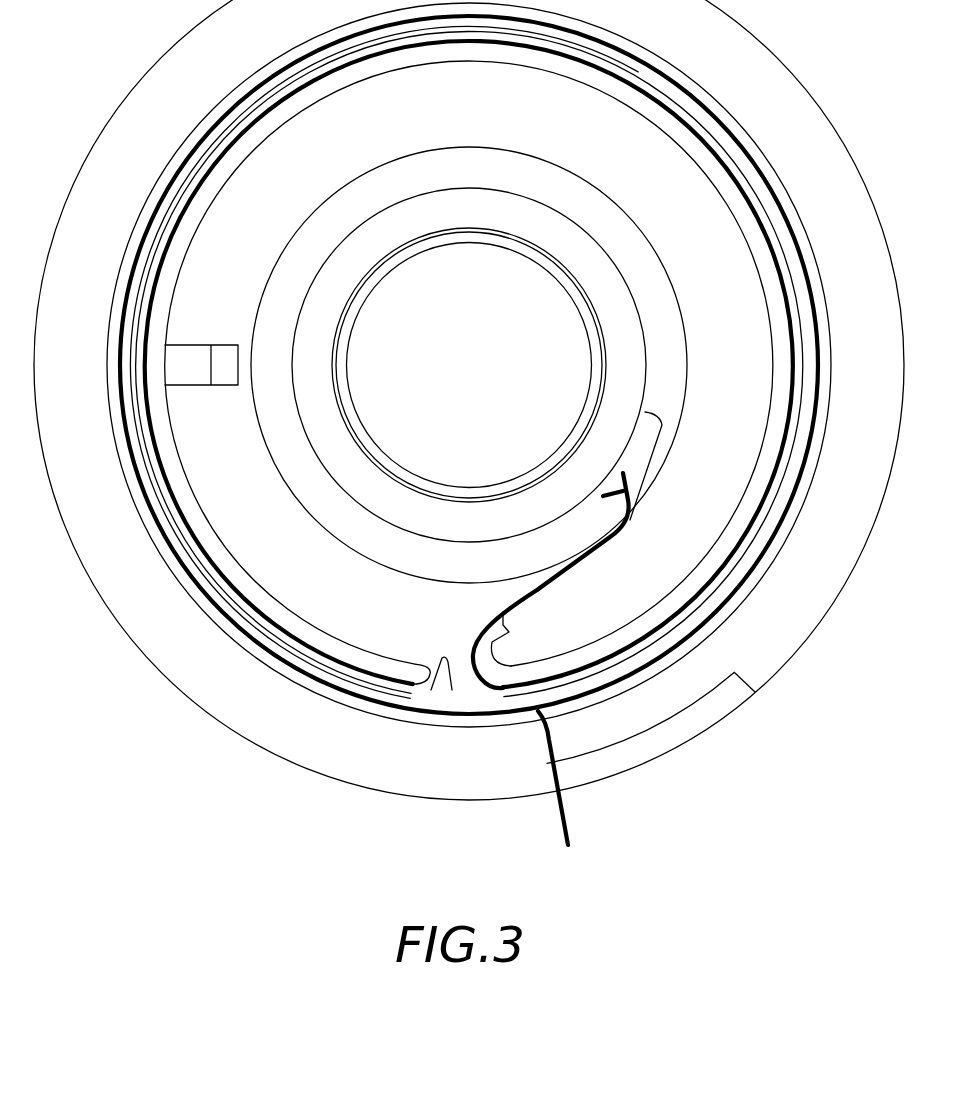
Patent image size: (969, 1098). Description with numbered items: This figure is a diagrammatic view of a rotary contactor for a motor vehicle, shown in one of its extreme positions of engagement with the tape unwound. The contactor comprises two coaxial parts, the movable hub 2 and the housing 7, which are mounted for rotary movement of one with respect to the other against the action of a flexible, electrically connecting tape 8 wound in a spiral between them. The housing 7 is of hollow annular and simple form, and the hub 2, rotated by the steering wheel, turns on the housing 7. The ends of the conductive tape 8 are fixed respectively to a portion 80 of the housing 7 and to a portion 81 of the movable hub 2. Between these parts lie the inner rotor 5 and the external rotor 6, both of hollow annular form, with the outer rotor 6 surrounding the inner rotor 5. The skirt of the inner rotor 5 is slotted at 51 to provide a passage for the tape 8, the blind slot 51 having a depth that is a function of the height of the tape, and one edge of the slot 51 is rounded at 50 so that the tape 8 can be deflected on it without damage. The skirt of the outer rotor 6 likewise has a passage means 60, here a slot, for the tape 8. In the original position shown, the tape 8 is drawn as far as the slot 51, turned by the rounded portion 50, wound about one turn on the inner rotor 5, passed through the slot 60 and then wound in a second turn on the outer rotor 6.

The movable hub 2 is at (318, 265).
The inner rotor 5 is at (310, 635).
The external rotor 6 is at (363, 690).
The housing 7 is at (177, 633).
The flexible electrically connecting tape 8 is at (445, 687).
The rounded edge portion 50 is at (492, 638).
The slot 51 is at (432, 690).
The passage means 60 is at (462, 695).
The housing portion 80 is at (698, 718).
The hub portion 81 is at (633, 455).